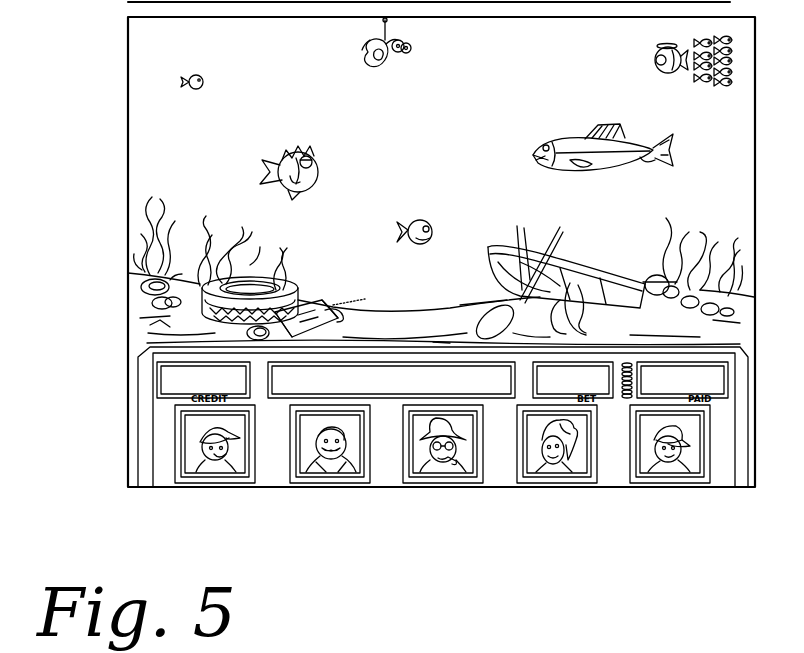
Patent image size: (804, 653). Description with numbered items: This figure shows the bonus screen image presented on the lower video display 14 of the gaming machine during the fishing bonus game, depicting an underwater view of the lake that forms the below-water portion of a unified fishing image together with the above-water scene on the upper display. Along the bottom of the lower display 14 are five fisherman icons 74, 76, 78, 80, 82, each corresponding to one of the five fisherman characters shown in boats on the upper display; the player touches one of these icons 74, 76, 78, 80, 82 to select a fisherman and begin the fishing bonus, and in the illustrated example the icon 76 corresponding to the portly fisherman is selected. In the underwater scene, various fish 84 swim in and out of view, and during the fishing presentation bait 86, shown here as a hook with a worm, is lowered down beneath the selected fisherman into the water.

The lower video display 14 is at (128, 155).
The fisherman icon 74 is at (207, 485).
The fisherman icon 76 is at (340, 485).
The fisherman icon 78 is at (457, 485).
The fisherman icon 80 is at (567, 485).
The fisherman icon 82 is at (680, 485).
The fish 84 is at (318, 163).
The bait 86 is at (390, 65).